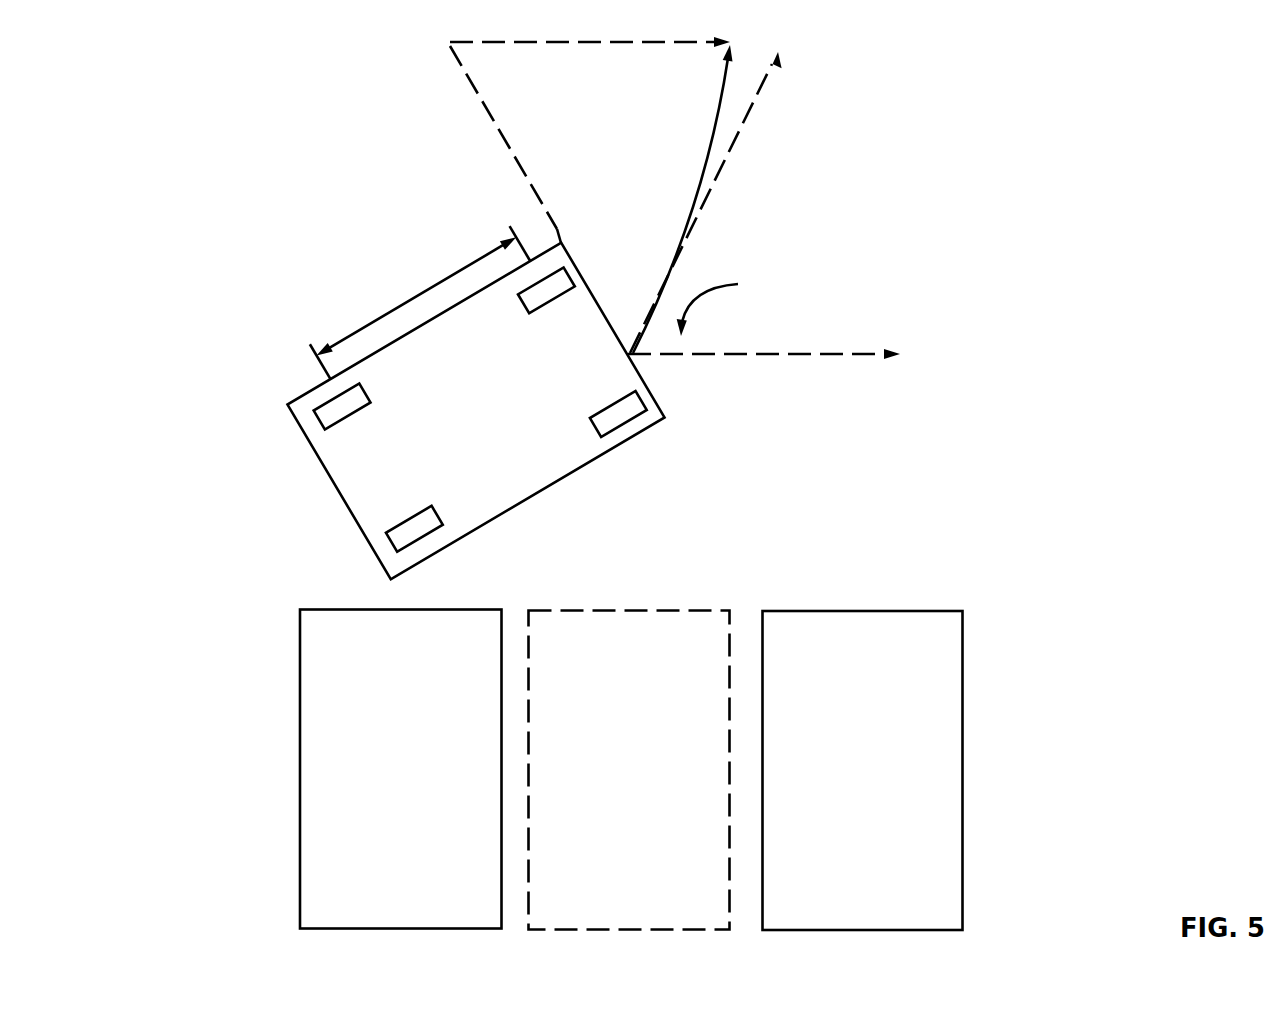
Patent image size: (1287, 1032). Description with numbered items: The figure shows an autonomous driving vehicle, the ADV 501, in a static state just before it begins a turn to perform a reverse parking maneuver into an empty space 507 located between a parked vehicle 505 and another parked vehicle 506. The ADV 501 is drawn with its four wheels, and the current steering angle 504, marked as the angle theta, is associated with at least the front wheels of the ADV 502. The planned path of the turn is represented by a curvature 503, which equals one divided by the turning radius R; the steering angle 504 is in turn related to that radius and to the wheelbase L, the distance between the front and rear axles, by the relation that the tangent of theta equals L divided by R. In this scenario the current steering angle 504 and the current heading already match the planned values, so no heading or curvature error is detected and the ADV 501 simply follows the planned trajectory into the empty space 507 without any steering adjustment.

The ADV 501 is at (357, 522).
The front wheels of the ADV 502 is at (481, 410).
The curvature 503 is at (712, 138).
The steering angle 504 is at (764, 205).
The vehicle 505 is at (300, 730).
The vehicle 506 is at (963, 772).
The empty space 507 is at (628, 610).